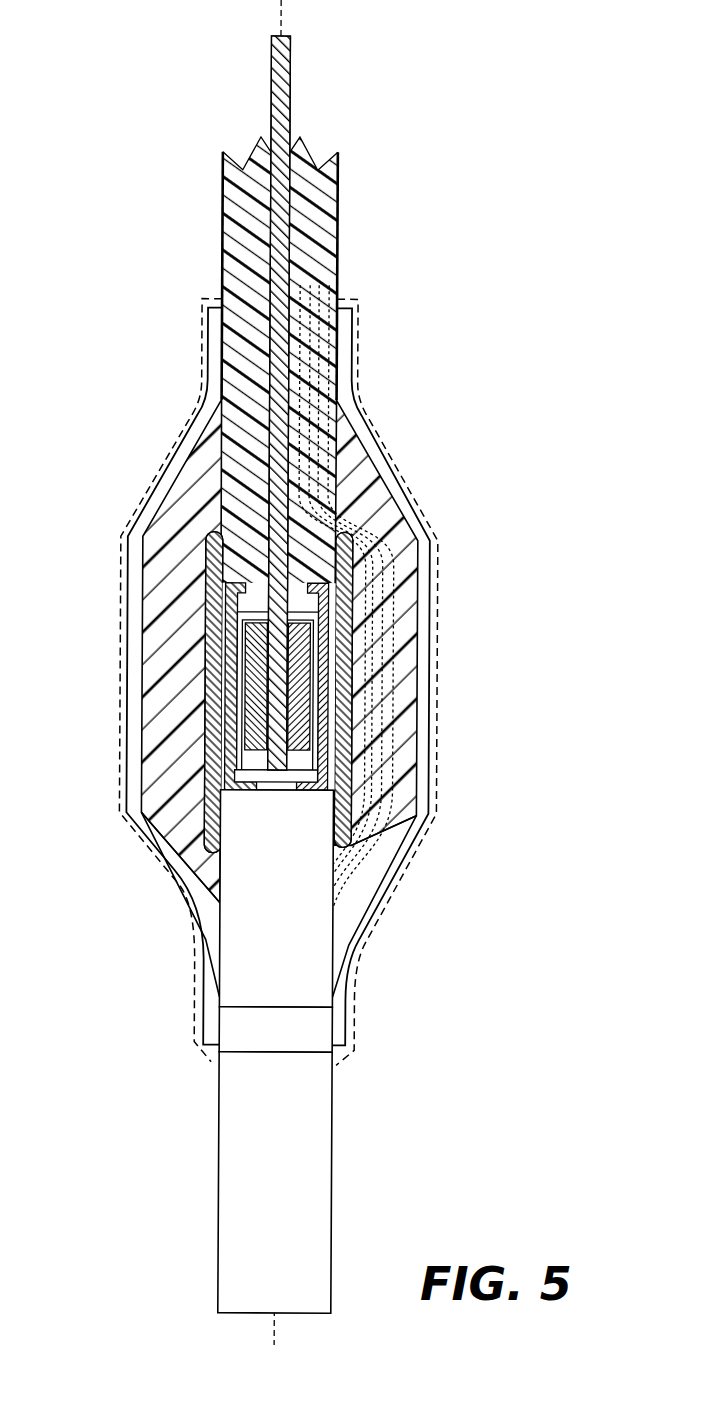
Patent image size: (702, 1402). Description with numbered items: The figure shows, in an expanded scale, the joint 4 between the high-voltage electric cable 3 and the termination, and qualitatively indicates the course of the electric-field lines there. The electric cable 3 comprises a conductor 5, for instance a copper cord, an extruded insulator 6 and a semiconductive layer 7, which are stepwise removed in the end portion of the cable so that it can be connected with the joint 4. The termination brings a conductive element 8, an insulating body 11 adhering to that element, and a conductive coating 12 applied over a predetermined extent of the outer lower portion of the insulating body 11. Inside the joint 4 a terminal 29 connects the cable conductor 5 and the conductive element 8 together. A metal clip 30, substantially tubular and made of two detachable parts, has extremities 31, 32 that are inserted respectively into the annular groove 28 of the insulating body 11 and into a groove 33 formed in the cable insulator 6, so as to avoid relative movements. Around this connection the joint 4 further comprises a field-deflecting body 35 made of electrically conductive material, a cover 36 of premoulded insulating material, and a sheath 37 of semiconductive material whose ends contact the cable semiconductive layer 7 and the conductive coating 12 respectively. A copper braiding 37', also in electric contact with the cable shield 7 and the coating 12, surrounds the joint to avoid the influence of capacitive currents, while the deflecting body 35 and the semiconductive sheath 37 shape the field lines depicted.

The electric cable 3 is at (235, 1138).
The joint 4 is at (484, 477).
The conductor 5 is at (268, 732).
The extruded insulator 6 is at (243, 952).
The semiconductive layer 7 is at (240, 1043).
The conductive element 8 is at (266, 206).
The insulating body 11 is at (336, 178).
The conductive coating 12 is at (336, 238).
The annular groove 28 is at (238, 572).
The terminal 29 is at (248, 708).
The metal clip 30 is at (212, 660).
The clip extremity 31 is at (223, 583).
The clip extremity 32 is at (210, 823).
The groove 33 is at (207, 913).
The field-deflecting body 35 is at (345, 663).
The cover 36 is at (126, 533).
The sheath 37 is at (149, 676).
The copper braiding 37' is at (425, 677).